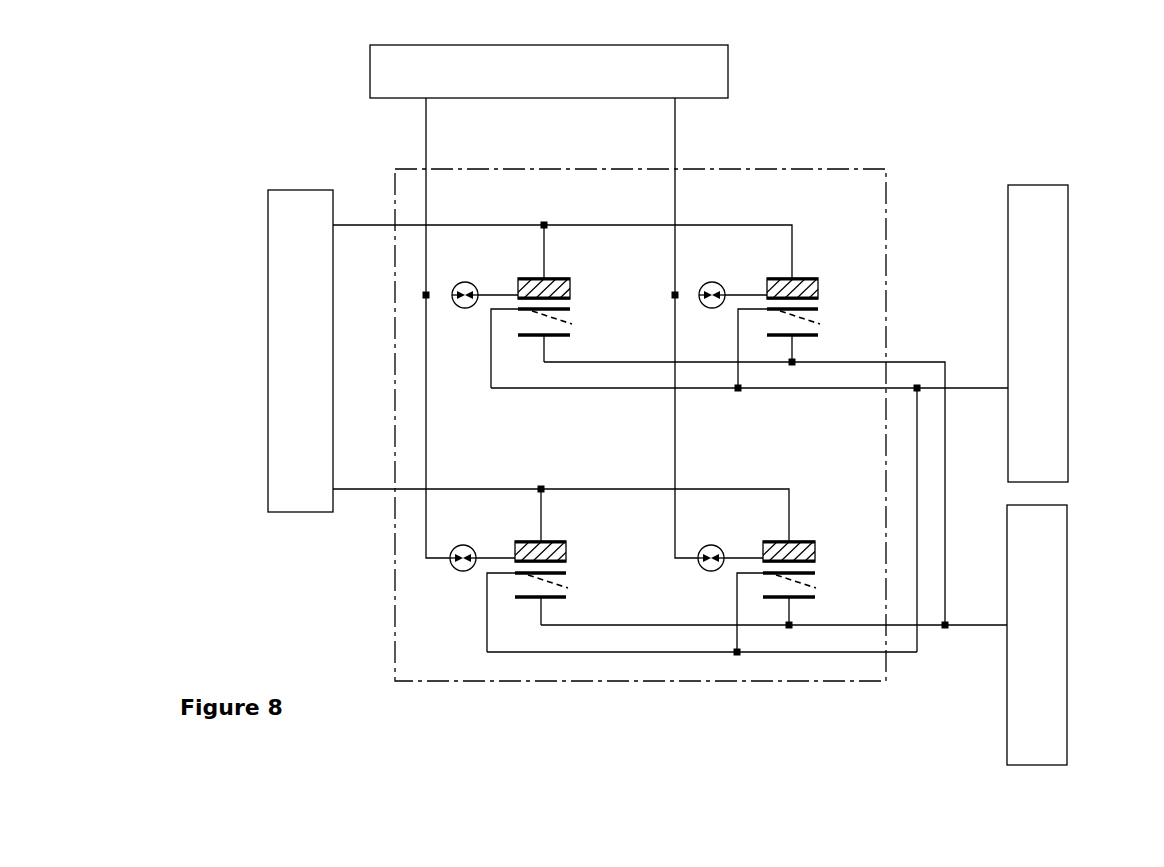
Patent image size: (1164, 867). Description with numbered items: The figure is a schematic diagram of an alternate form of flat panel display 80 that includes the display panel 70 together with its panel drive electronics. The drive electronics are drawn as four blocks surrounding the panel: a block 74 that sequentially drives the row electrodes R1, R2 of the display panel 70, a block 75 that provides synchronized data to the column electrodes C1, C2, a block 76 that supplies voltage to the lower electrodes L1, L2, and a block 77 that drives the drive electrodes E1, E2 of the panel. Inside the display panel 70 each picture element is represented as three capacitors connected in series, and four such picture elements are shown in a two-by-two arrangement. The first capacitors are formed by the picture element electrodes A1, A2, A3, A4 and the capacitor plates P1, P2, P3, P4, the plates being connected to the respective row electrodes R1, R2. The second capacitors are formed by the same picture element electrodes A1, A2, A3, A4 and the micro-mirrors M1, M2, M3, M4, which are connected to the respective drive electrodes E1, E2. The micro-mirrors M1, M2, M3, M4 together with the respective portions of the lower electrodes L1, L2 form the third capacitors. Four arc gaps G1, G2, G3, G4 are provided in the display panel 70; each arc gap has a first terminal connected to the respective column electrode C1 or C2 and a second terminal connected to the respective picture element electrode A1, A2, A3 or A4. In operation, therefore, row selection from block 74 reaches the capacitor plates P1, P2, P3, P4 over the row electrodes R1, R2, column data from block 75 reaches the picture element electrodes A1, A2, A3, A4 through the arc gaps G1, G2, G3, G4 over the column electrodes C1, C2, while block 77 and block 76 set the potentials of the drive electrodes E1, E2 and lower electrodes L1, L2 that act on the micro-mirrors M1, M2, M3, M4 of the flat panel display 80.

The flat panel display 80 is at (236, 101).
The block for providing synchronized data to the column electrodes 75 is at (370, 66).
The block for sequentially driving row electrodes 74 is at (268, 300).
The display panel 70 is at (899, 167).
The block for driving electrodes E1 and E2 77 is at (1068, 361).
The block for supplying voltage to the lower electrodes 76 is at (1067, 514).
The column electrode C1 is at (421, 328).
The column electrode C2 is at (667, 328).
The row electrode R1 is at (562, 237).
The row electrode R2 is at (561, 499).
The arc gap G1 is at (483, 280).
The arc gap G2 is at (731, 280).
The arc gap G3 is at (481, 543).
The arc gap G4 is at (729, 543).
The capacitor plate P1 is at (556, 276).
The capacitor plate P2 is at (805, 276).
The capacitor plate P3 is at (553, 539).
The capacitor plate P4 is at (801, 539).
The picture element electrode A1 is at (547, 337).
The picture element electrode A2 is at (795, 337).
The picture element electrode A3 is at (543, 600).
The picture element electrode A4 is at (793, 600).
The micro-mirror M1 is at (562, 334).
The micro-mirror M2 is at (811, 334).
The micro-mirror M3 is at (559, 597).
The micro-mirror M4 is at (808, 597).
The lower electrode L1 is at (744, 479).
The lower electrode L2 is at (774, 612).
The drive electrode E1 is at (749, 517).
The drive electrode E2 is at (702, 660).